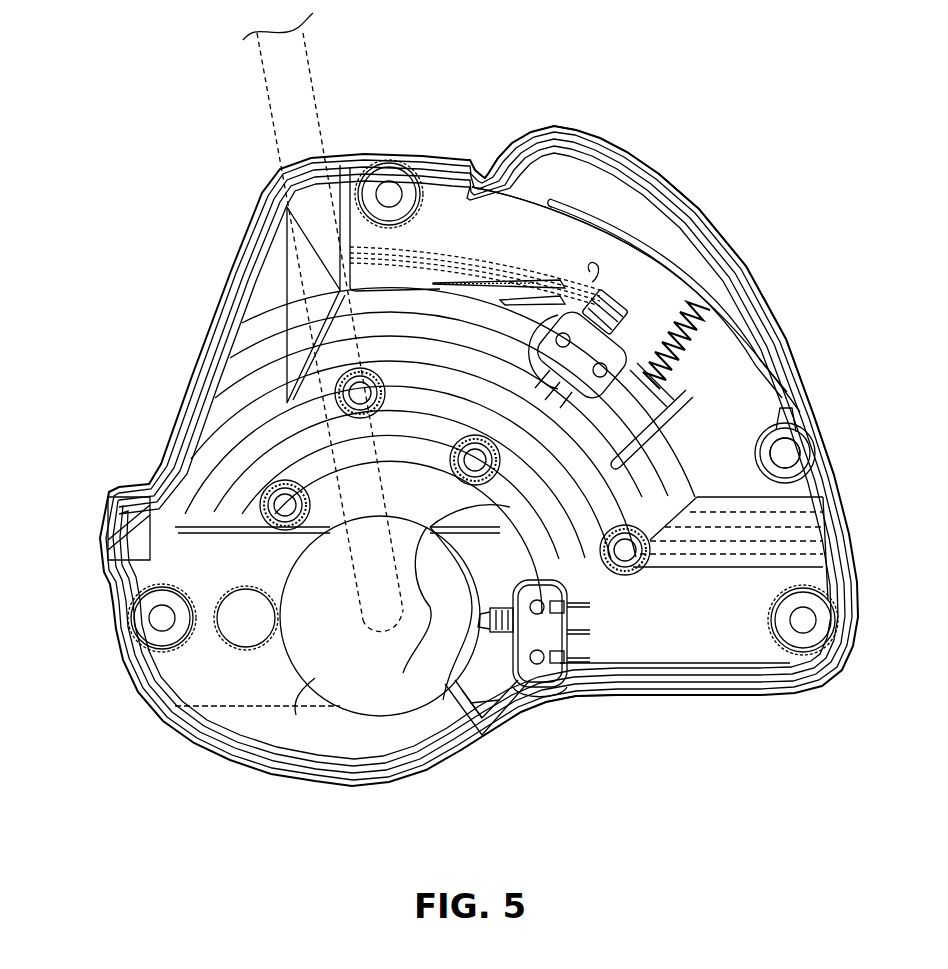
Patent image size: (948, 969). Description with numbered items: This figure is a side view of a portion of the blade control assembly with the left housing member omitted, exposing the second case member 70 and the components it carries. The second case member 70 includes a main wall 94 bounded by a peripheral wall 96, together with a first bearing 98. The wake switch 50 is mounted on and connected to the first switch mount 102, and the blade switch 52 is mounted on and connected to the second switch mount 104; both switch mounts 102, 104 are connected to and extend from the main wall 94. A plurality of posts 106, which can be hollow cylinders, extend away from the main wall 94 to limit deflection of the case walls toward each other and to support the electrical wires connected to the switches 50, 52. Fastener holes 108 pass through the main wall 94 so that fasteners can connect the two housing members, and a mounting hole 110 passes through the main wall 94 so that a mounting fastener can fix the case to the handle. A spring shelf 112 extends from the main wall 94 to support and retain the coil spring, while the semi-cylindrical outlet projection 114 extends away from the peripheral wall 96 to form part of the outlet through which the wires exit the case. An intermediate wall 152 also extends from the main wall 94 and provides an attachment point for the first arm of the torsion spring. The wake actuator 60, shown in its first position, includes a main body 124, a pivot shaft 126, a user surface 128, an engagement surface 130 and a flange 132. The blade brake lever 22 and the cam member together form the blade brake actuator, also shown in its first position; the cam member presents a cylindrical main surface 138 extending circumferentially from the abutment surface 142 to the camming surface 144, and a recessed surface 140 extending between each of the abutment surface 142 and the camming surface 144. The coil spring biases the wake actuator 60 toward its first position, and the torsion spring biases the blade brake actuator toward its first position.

The blade brake lever 22 is at (316, 60).
The wake switch 50 is at (548, 370).
The blade switch 52 is at (538, 700).
The wake actuator 60 is at (760, 213).
The second case member 70 is at (220, 294).
The main wall 94 is at (688, 644).
The peripheral wall 96 is at (757, 696).
The first bearing 98 is at (823, 507).
The first switch mount 102 is at (537, 327).
The second switch mount 104 is at (540, 578).
The posts 106 is at (279, 490).
The fastener holes 108 is at (392, 190).
The mounting hole 110 is at (245, 622).
The spring shelf 112 is at (787, 410).
The outlet projection 114 is at (123, 487).
The main body 124 is at (737, 300).
The pivot shaft 126 is at (790, 455).
The user surface 128 is at (640, 165).
The engagement surface 130 is at (567, 238).
The flange 132 is at (644, 238).
The main surface 138 is at (296, 715).
The recessed surface 140 is at (467, 563).
The abutment surface 142 is at (470, 705).
The camming surface 144 is at (418, 655).
The intermediate wall 152 is at (518, 697).